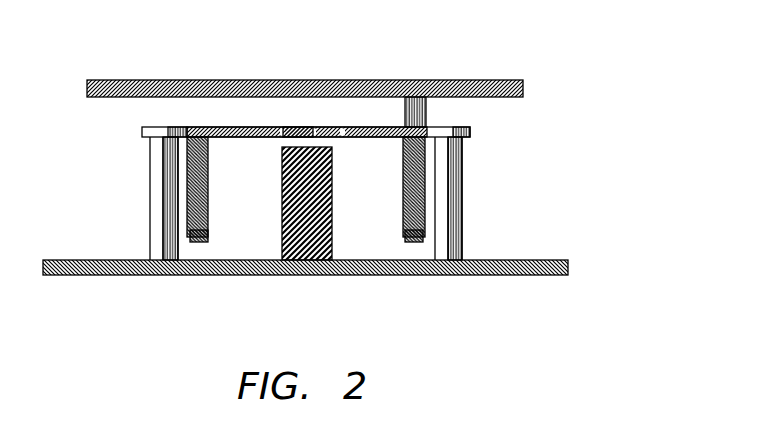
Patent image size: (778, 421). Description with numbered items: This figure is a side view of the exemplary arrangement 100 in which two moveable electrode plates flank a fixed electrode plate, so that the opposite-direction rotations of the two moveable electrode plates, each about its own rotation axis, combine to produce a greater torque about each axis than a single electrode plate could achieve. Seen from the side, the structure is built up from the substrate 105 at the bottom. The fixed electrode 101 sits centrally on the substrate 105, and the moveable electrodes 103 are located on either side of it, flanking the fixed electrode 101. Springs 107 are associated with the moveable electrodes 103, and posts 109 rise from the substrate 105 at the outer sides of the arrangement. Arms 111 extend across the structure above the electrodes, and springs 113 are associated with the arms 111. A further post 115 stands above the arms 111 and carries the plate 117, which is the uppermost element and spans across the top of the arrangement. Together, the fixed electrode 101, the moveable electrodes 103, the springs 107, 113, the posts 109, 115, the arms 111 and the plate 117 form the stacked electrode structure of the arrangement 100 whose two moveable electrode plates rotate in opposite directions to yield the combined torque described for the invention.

The arrangement 100 is at (664, 144).
The fixed electrode 101 is at (305, 260).
The moveable electrodes 103 is at (195, 242).
The substrate 105 is at (527, 260).
The springs 107 is at (194, 137).
The posts 109 is at (154, 198).
The arms 111 is at (243, 127).
The springs 113 is at (298, 127).
The post 115 is at (413, 127).
The plate 117 is at (523, 82).